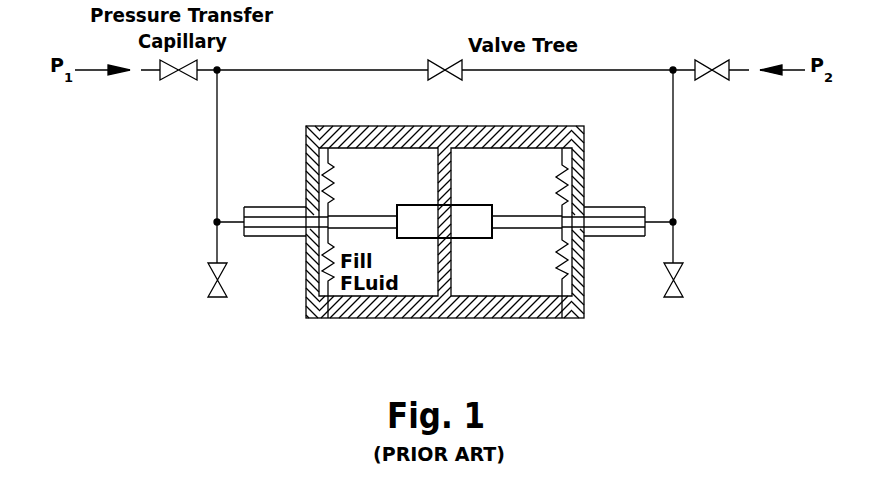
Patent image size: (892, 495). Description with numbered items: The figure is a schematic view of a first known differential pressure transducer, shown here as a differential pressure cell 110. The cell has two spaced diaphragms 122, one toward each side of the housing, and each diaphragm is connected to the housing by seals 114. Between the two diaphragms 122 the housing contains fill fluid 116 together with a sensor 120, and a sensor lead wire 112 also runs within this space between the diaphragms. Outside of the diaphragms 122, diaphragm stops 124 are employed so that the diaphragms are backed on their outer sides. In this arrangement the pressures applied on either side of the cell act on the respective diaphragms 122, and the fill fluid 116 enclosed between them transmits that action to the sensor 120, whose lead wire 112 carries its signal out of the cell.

The differential pressure cell 110 is at (293, 296).
The sensor lead wire 112 is at (445, 318).
The seals 114 is at (445, 318).
The fill fluid 116 is at (307, 261).
The sensor 120 is at (418, 205).
The diaphragms 122 is at (324, 183).
The diaphragm stops 124 is at (566, 258).